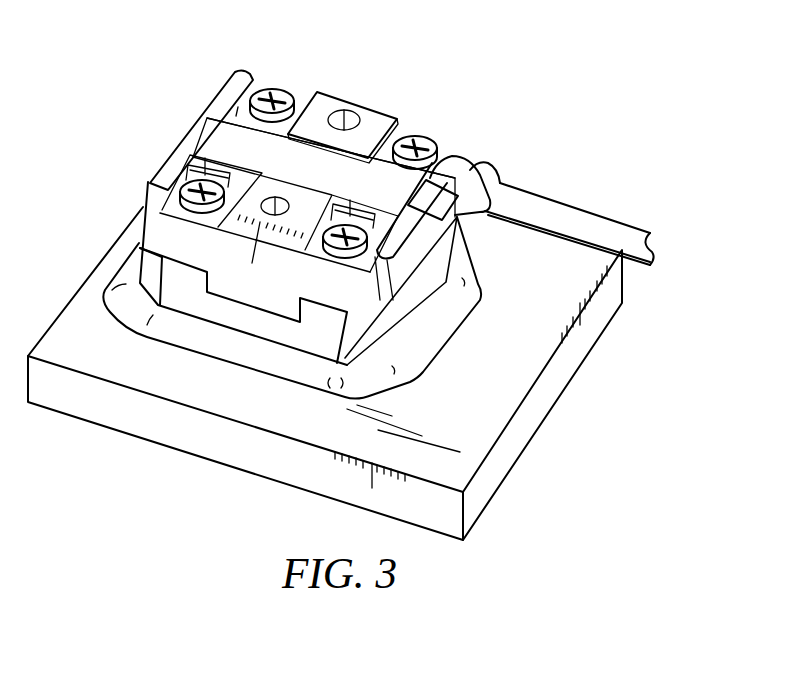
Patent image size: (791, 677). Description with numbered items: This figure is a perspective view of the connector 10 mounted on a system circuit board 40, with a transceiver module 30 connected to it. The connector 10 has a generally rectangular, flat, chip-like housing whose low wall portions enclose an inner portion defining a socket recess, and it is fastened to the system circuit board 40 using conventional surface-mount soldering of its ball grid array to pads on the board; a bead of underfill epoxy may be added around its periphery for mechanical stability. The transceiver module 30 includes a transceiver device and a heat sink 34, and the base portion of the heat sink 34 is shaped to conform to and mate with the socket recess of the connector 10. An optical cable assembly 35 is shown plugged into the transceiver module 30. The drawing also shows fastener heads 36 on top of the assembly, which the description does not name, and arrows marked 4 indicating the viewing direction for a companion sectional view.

The connector 10 is at (188, 297).
The transceiver module 30 is at (401, 97).
The heat sink 34 is at (337, 93).
The optical cable assembly 35 is at (573, 213).
The terminal screws 36 is at (284, 90).
The system circuit board 40 is at (126, 282).
The section line 4- 4 is at (190, 108).